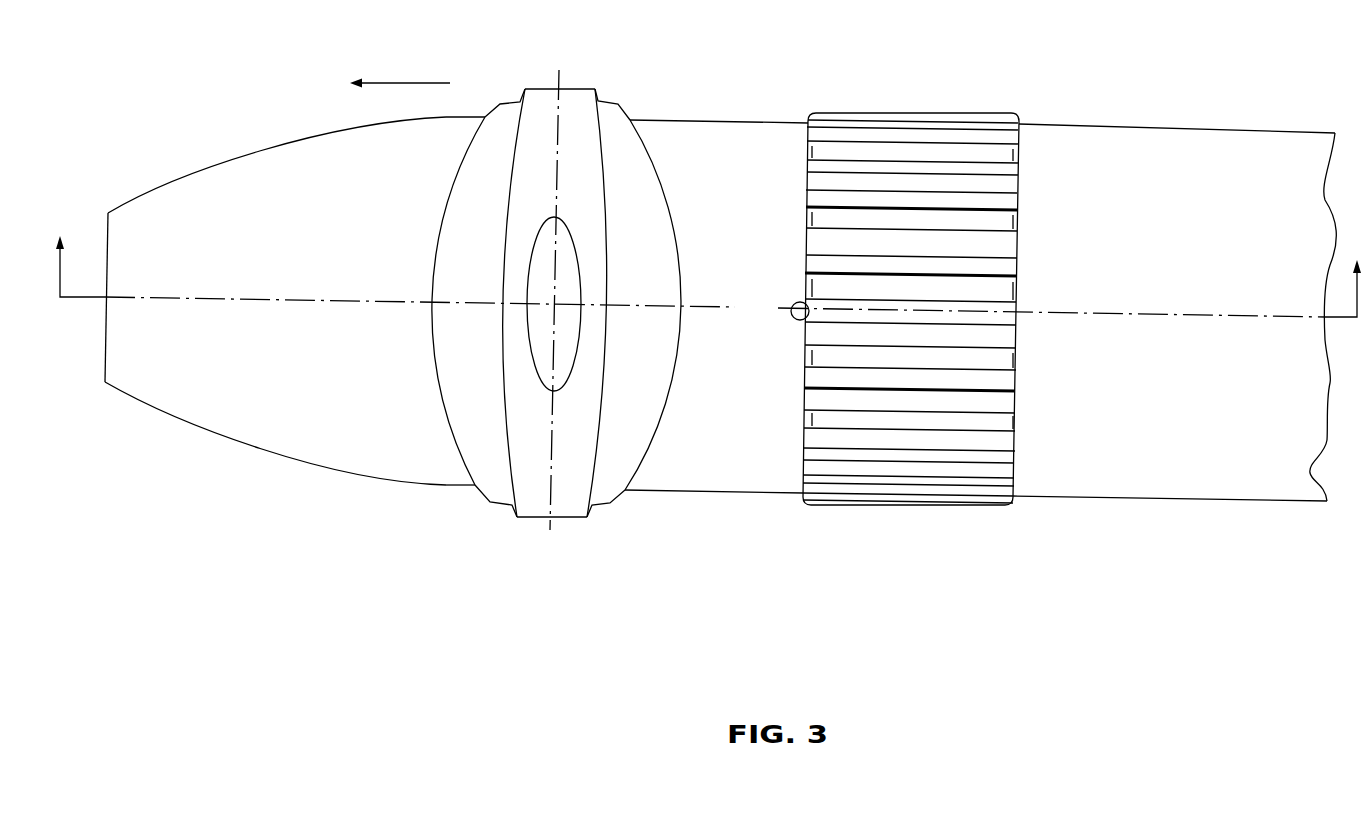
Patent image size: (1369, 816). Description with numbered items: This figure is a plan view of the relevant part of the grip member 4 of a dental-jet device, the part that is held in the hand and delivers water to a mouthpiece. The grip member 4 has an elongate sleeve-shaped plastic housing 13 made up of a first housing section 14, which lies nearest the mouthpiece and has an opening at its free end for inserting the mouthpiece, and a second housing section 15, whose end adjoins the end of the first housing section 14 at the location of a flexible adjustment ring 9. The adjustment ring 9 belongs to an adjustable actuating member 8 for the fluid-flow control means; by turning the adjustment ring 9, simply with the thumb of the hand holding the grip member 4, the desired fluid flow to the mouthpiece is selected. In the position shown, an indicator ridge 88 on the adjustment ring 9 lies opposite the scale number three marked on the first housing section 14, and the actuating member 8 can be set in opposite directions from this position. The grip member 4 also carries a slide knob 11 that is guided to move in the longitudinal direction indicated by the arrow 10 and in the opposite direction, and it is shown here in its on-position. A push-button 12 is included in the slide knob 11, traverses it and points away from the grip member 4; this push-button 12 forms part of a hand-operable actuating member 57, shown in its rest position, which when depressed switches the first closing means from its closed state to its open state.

The grip member 4 is at (350, 546).
The actuating member 8 is at (1012, 100).
The adjustment ring 9 is at (824, 237).
The arrow 10 is at (402, 83).
The slide knob 11 is at (578, 110).
The push-button 12 is at (547, 235).
The housing 13 is at (712, 507).
The first housing section 14 is at (311, 440).
The second housing section 15 is at (1182, 490).
The actuating member 57 is at (536, 404).
The indicator ridge 88 is at (1000, 305).